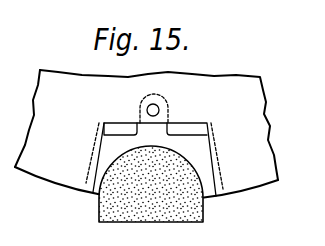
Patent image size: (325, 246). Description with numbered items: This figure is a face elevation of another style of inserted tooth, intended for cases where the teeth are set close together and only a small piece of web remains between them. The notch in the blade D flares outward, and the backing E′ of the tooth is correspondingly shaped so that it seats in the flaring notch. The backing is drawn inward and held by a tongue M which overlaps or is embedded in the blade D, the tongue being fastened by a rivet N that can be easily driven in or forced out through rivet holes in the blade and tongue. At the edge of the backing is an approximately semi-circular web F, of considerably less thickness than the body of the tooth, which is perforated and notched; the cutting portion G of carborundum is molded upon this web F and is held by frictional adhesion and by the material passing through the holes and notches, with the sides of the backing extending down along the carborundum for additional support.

The blade D is at (216, 124).
The backing E′ is at (207, 168).
The tongue M is at (178, 105).
The rivet N is at (149, 108).
The cutting portion G is at (99, 209).
The web F is at (204, 199).